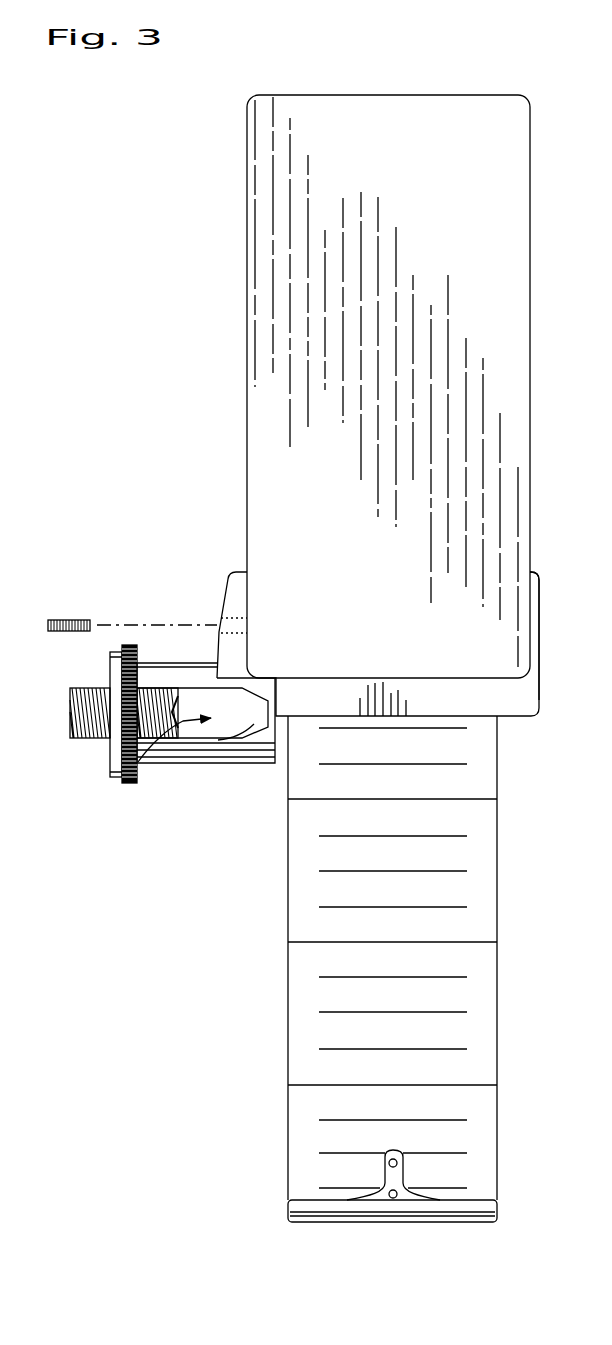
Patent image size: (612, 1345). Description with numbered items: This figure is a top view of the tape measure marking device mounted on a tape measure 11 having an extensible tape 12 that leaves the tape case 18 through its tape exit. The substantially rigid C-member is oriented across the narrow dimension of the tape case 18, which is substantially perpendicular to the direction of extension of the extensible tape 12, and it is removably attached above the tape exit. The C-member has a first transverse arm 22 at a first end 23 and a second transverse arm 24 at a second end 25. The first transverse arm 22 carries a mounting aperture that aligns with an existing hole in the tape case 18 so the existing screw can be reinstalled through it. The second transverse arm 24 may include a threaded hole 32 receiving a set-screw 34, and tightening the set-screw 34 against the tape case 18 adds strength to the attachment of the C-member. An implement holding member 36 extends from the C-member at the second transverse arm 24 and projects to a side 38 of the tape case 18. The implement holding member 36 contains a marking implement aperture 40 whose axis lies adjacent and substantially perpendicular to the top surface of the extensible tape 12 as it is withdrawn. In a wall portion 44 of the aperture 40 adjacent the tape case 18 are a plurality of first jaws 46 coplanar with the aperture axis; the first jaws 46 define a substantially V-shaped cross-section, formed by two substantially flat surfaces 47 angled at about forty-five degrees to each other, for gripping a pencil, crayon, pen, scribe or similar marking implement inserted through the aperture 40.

The tape measure 11 is at (157, 162).
The extensible tape 12 is at (196, 1138).
The tape case 18 is at (247, 308).
The first transverse arm 22 is at (540, 608).
The first end 23 is at (563, 722).
The second transverse arm 24 is at (236, 568).
The second end 25 is at (135, 537).
The threaded hole 32 is at (217, 626).
The set-screw 34 is at (65, 620).
The implement holding member 36 is at (82, 681).
The side of the tape case 38 is at (189, 945).
The marking implement aperture 40 is at (205, 702).
The wall portion 44 is at (264, 740).
The first jaws 46 is at (122, 783).
The flat surfaces 47 is at (250, 693).